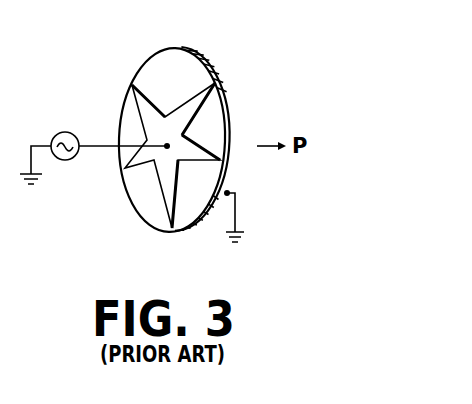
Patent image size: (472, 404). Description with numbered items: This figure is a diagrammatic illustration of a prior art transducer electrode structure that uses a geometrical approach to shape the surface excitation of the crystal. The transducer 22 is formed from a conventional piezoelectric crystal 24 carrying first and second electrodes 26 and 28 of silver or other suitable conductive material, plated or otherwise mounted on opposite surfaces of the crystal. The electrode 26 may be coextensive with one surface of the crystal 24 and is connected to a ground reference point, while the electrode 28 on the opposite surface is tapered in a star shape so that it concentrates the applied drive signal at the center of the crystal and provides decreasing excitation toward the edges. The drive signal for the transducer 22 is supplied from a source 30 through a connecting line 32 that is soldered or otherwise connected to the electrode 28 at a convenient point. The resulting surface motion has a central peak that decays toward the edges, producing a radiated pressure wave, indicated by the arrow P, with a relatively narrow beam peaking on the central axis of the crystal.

The transducer 22 is at (178, 126).
The piezoelectric crystal 24 is at (163, 62).
The first electrode 26 is at (233, 110).
The second electrode 28 is at (143, 103).
The source 30 is at (53, 135).
The connecting line 32 is at (97, 151).